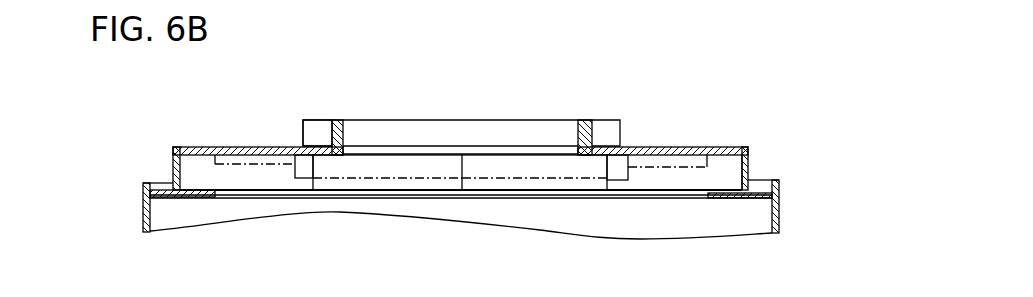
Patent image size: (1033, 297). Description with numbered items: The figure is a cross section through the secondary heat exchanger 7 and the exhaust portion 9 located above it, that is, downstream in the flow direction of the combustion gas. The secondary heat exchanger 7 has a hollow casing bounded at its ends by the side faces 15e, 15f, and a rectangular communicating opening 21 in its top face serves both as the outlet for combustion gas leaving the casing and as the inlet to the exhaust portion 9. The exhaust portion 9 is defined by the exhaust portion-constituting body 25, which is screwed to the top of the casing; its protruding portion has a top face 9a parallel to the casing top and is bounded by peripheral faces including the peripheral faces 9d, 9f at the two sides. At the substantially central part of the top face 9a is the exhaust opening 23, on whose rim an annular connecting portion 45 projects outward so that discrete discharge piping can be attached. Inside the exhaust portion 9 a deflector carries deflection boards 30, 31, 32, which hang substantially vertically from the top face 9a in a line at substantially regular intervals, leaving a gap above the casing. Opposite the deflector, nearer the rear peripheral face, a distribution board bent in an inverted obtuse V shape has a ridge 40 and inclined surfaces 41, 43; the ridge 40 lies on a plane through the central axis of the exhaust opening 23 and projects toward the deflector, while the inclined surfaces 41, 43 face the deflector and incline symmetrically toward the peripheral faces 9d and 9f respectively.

The secondary heat exchanger 7 is at (135, 201).
The exhaust portion 9 is at (755, 145).
The top face 9a is at (233, 147).
The peripheral face 9d is at (778, 180).
The peripheral face 9f is at (177, 163).
The side face 15e is at (143, 214).
The side face 15f is at (777, 233).
The communicating opening 21 is at (258, 196).
The exhaust opening 23 is at (562, 135).
The exhaust portion-constituting body 25 is at (750, 164).
The deflection board 30 is at (552, 163).
The deflection board 31 is at (648, 161).
The deflection board 32 is at (263, 158).
The ridge 40 is at (462, 189).
The inclined surface 41 is at (547, 184).
The inclined surface 43 is at (372, 184).
The connecting portion 45 is at (304, 121).